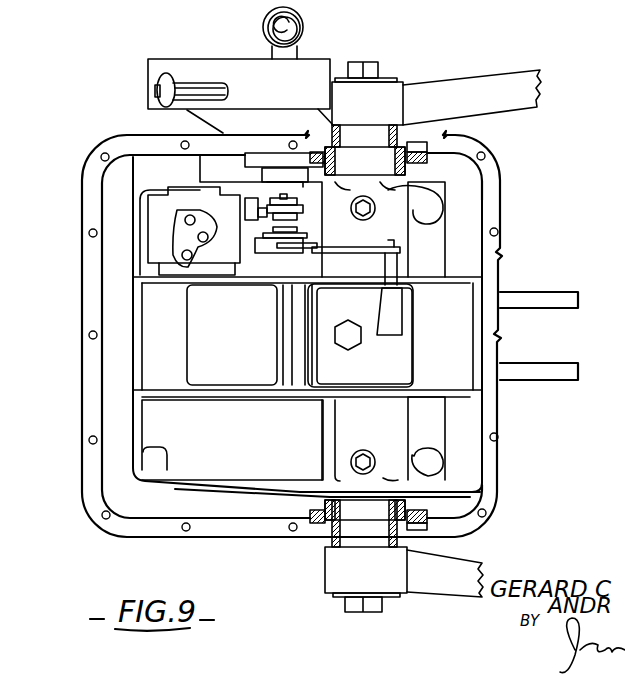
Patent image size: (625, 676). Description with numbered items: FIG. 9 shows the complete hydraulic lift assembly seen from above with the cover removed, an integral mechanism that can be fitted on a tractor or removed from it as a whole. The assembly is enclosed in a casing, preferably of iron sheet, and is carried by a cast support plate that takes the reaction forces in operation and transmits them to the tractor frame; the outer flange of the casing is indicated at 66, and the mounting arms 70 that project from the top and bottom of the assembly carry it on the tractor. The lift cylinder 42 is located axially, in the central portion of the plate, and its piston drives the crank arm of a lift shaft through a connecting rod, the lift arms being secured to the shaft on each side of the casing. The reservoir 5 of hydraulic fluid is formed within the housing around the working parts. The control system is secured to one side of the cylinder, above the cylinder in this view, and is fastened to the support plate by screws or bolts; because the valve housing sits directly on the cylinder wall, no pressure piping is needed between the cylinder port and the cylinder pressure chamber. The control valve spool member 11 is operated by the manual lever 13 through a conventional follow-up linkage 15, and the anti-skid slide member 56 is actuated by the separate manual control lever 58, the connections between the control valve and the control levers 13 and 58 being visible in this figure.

The reservoir 5 is at (115, 450).
The spool member 11 is at (168, 173).
The manual lever 13 is at (283, 25).
The follow-up linkage 15 is at (367, 247).
The lift cylinder 42 is at (152, 322).
The slide member 56 is at (255, 210).
The manual control lever 58 is at (198, 90).
The cover flange 66 is at (93, 370).
The mounting arm 70 is at (492, 88).